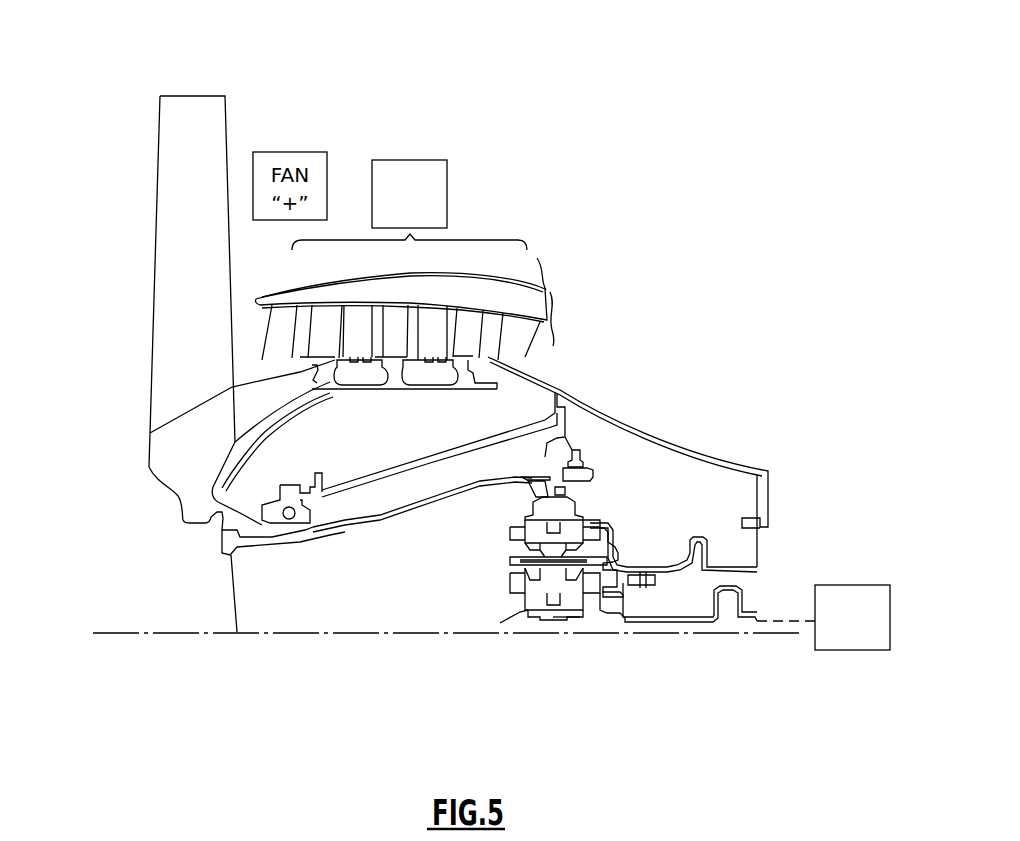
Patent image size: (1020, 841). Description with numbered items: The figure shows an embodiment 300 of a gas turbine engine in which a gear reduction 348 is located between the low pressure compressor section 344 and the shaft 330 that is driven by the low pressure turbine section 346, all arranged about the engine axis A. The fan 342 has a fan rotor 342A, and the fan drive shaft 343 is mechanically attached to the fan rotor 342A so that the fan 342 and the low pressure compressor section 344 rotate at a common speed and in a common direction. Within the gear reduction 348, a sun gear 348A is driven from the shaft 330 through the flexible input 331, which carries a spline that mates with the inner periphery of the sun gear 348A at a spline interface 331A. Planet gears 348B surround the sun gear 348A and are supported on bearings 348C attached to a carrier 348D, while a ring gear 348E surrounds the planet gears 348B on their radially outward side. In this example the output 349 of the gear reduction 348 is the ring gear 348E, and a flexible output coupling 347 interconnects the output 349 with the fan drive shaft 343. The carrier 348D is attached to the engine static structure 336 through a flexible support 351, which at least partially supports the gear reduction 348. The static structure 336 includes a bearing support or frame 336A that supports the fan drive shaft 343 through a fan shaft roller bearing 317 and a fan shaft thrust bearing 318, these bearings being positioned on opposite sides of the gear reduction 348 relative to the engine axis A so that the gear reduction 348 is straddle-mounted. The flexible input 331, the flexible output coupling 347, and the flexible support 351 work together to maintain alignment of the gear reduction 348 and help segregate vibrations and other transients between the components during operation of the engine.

The embodiment 300 is at (128, 80).
The fan 342 is at (207, 163).
The fan rotor 342A is at (181, 497).
The low pressure compressor section 344 is at (447, 194).
The engine static structure 336 is at (596, 393).
The bearing support or frame 336A is at (403, 470).
The fan shaft roller bearing 317 is at (577, 456).
The fan shaft thrust bearing 318 is at (300, 485).
The fan drive shaft 343 is at (470, 490).
The flexible output coupling 347 is at (537, 490).
The output 349 is at (578, 510).
The gear reduction 348 is at (485, 564).
The ring gear 348E is at (537, 517).
The planet gears 348B is at (520, 540).
The bearings 348C is at (518, 565).
The carrier 348D is at (505, 578).
The sun gear 348A is at (510, 620).
The flexible support 351 is at (690, 530).
The low pressure turbine section 346 is at (825, 585).
The flexible input 331 is at (670, 633).
The spline interface 331A is at (560, 620).
The shaft 330 is at (788, 622).
The engine axis A is at (727, 637).